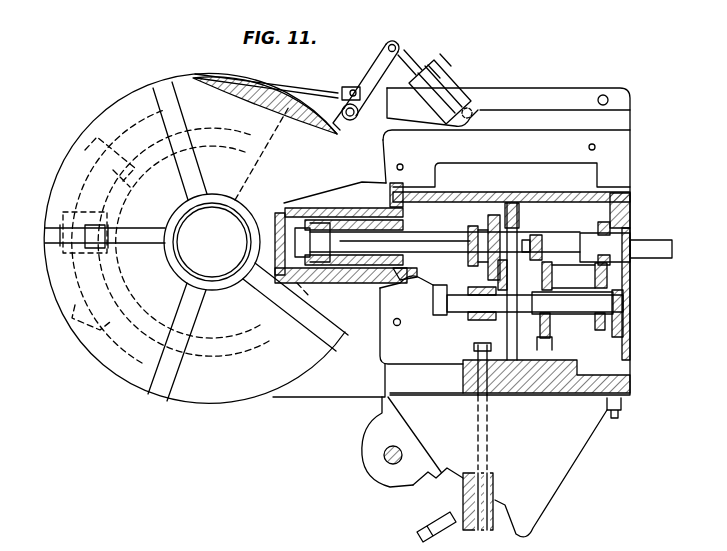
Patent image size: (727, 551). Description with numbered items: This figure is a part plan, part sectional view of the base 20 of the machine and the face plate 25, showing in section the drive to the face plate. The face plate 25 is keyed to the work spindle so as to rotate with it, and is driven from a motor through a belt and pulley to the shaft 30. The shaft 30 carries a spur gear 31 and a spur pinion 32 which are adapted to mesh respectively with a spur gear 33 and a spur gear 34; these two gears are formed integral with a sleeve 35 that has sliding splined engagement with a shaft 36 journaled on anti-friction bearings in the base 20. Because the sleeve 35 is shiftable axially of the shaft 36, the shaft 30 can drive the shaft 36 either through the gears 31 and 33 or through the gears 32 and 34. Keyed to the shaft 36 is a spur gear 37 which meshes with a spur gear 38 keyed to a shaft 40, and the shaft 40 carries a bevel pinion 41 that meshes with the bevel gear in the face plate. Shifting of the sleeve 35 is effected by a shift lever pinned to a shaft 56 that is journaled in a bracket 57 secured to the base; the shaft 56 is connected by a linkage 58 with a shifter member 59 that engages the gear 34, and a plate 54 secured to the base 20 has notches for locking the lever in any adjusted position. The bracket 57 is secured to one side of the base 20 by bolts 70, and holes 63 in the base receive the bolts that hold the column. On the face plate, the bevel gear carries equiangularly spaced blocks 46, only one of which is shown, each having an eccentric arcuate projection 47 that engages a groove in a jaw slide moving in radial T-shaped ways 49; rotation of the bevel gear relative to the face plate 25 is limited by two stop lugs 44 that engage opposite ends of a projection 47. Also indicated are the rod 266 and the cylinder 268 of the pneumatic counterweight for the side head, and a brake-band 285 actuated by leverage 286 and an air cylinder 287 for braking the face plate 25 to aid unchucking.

The base 20 is at (335, 382).
The face plate 25 is at (243, 393).
The shaft 30 is at (650, 245).
The spur gear 31 is at (599, 228).
The spur pinion 32 is at (538, 234).
The spur gear 33 is at (592, 328).
The spur gear 34 is at (548, 327).
The sleeve 35 is at (560, 291).
The shaft 36 is at (603, 303).
The spur gear 37 is at (487, 323).
The spur gear 38 is at (483, 232).
The shaft 40 is at (420, 240).
The bevel pinion 41 is at (311, 232).
The stop lugs 44 is at (89, 320).
The blocks 46 is at (63, 212).
The arcuate projection 47 is at (60, 238).
The T-shaped ways 49 is at (168, 367).
The plate 54 is at (483, 521).
The shaft 56 is at (480, 488).
The bracket 57 is at (561, 470).
The linkage 58 is at (499, 362).
The shifter member 59 is at (551, 347).
The holes 63 is at (401, 164).
The bolts 70 is at (613, 418).
The rod 266 is at (383, 456).
The cylinder 268 is at (387, 478).
The brake-band 285 is at (288, 84).
The leverage 286 is at (374, 70).
The air cylinder 287 is at (445, 80).